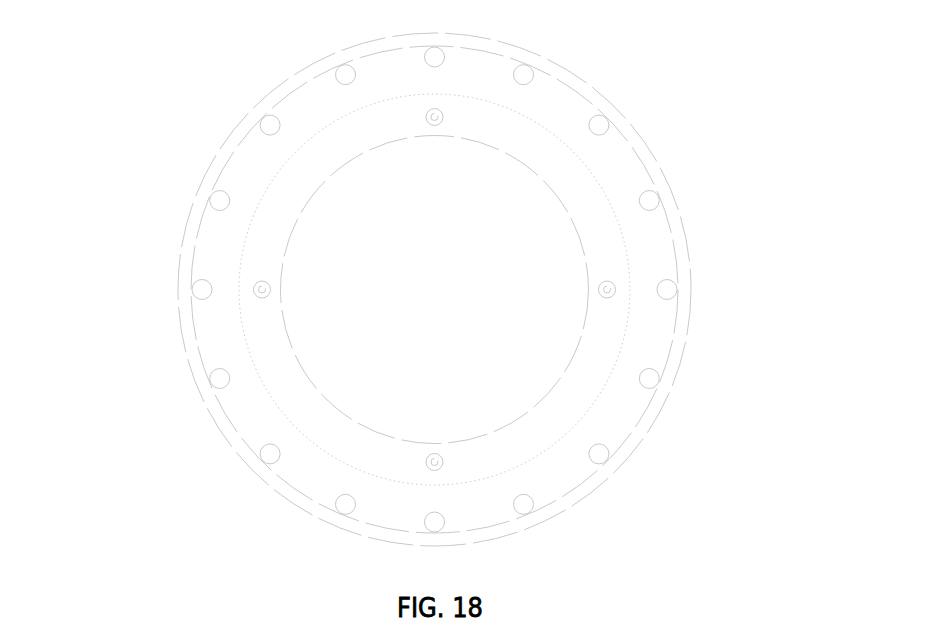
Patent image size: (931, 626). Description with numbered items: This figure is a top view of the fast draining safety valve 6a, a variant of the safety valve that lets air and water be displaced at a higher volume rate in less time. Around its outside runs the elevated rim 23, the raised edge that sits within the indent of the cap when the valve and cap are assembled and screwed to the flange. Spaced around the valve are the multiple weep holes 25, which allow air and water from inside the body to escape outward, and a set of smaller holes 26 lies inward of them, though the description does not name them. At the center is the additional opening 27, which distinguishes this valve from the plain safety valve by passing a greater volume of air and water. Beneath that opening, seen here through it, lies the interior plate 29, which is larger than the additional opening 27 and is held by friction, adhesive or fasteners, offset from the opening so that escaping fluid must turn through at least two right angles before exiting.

The fast draining safety valve 6a is at (471, 280).
The elevated rim 23 is at (500, 289).
The weep holes 25 is at (340, 77).
The pin holes 26 is at (340, 290).
The additional opening 27 is at (435, 290).
The interior plate 29 is at (545, 448).